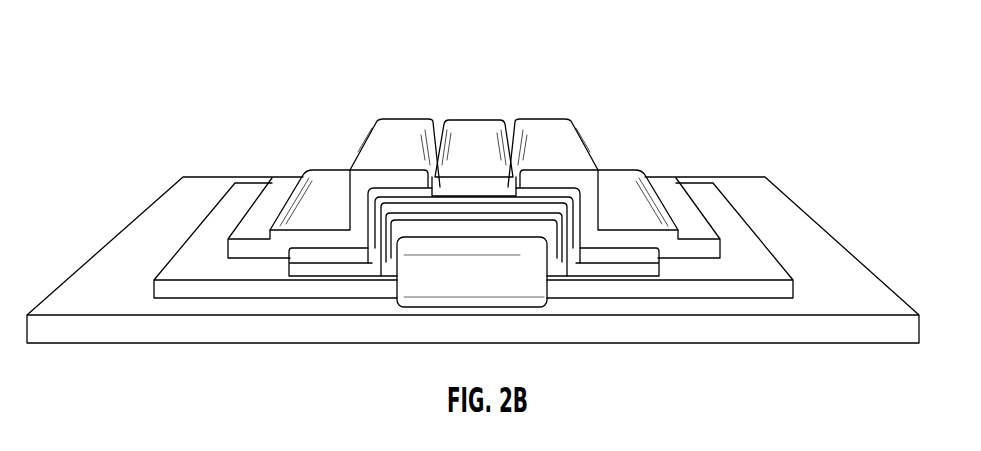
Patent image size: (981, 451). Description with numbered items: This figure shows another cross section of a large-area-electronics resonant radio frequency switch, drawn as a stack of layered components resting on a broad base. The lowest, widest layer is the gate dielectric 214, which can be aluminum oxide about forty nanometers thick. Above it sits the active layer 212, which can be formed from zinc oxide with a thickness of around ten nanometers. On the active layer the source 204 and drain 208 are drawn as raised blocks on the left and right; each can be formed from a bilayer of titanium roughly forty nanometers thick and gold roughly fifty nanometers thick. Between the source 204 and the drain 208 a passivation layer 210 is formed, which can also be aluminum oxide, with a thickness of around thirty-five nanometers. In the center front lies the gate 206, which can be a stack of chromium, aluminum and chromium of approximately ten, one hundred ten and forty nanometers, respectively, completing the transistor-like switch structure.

The source 204 is at (367, 182).
The gate 206 is at (436, 285).
The drain 208 is at (596, 178).
The passivation layer 210 is at (476, 137).
The active layer 212 is at (635, 268).
The gate dielectric 214 is at (810, 264).